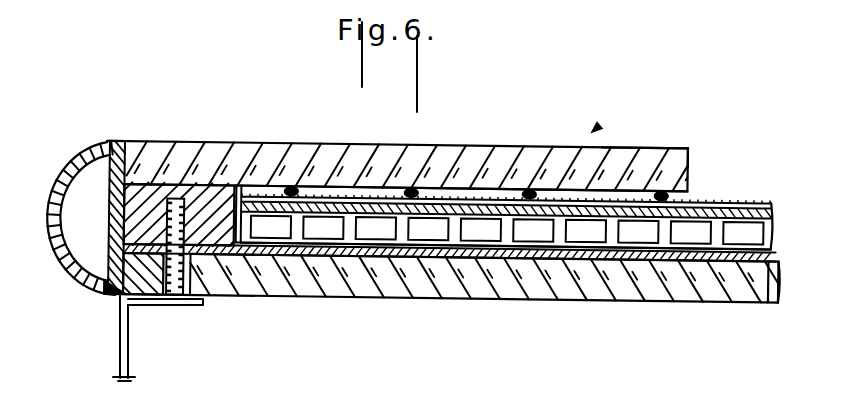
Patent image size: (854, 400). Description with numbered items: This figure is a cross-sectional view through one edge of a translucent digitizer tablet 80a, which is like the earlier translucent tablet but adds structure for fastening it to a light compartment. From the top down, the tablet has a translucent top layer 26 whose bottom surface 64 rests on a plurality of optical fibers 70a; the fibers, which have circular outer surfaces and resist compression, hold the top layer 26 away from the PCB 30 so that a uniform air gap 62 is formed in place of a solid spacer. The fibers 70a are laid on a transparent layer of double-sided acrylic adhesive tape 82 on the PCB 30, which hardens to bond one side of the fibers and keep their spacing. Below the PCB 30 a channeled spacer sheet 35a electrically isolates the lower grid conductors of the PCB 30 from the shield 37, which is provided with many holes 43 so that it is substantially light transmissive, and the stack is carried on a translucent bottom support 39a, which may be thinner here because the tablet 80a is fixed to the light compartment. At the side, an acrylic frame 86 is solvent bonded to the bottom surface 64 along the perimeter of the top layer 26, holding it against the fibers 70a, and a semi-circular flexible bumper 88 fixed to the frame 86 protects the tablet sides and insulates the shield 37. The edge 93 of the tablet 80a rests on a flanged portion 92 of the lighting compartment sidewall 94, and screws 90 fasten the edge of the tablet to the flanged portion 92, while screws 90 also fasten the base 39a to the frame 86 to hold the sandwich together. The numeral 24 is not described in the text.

The cover plate 24 is at (273, 148).
The top translucent layer 26 is at (670, 147).
The PCB 30 is at (770, 222).
The channeled spacer sheet 35a is at (546, 258).
The shield 37 is at (483, 262).
The translucent bottom support 39a is at (645, 290).
The holes 43 is at (722, 265).
The air gap 62 is at (685, 168).
The bottom surface 64 is at (338, 188).
The optical fibers 70a is at (410, 186).
The tablet 80a is at (594, 130).
The double-sided acrylic adhesive tape 82 is at (730, 208).
The frame 86 is at (152, 188).
The flexible bumper 88 is at (93, 141).
The screws 90 is at (180, 308).
The flanged portion 92 is at (203, 299).
The edge 93 is at (120, 294).
The lighting compartment sidewall 94 is at (118, 369).